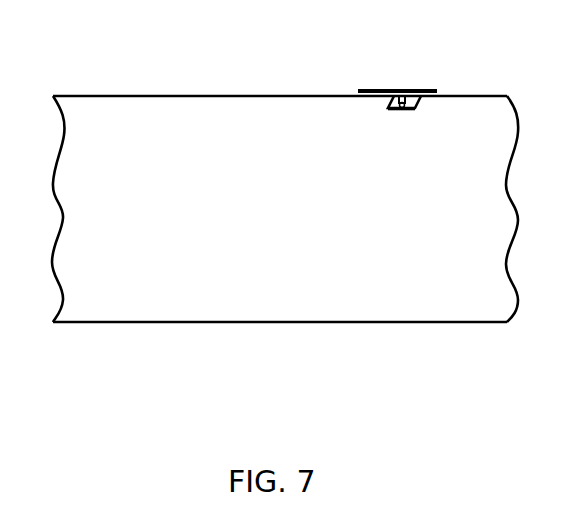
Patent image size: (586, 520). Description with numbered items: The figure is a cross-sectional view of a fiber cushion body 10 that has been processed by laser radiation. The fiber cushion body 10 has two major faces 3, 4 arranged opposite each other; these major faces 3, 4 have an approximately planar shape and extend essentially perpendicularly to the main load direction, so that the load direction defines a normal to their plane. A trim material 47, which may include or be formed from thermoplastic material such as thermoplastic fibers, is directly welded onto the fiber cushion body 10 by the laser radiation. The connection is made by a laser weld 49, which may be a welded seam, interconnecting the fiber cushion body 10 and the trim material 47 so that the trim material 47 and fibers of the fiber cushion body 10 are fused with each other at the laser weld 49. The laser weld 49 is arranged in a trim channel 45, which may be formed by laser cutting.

The fiber cushion body 10 is at (53, 96).
The major face 3 is at (105, 96).
The major face 4 is at (113, 323).
The trim material 47 is at (372, 89).
The trim channel 45 is at (419, 108).
The laser weld 49 is at (399, 109).